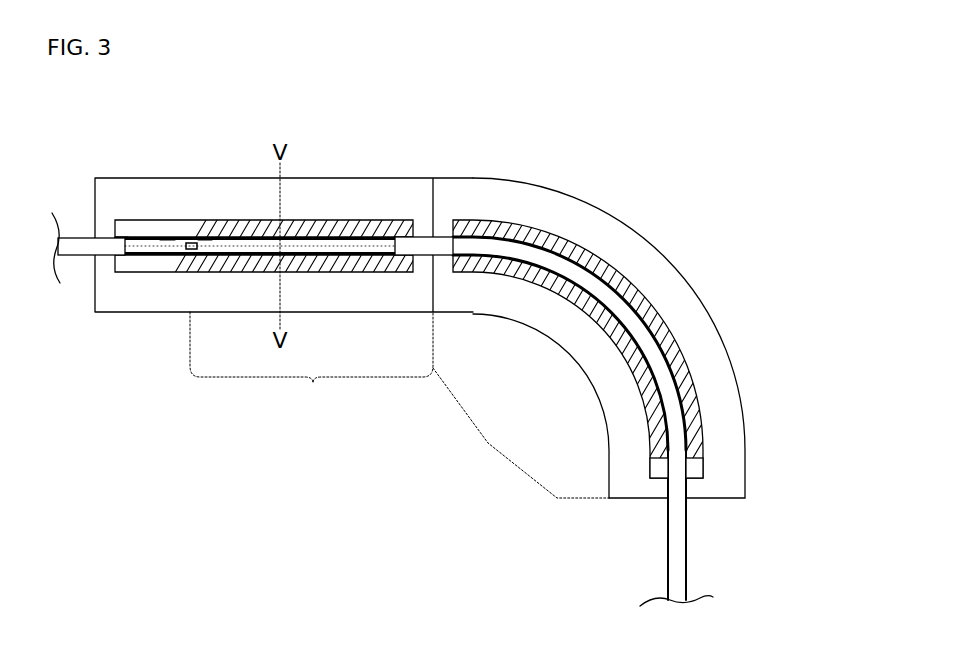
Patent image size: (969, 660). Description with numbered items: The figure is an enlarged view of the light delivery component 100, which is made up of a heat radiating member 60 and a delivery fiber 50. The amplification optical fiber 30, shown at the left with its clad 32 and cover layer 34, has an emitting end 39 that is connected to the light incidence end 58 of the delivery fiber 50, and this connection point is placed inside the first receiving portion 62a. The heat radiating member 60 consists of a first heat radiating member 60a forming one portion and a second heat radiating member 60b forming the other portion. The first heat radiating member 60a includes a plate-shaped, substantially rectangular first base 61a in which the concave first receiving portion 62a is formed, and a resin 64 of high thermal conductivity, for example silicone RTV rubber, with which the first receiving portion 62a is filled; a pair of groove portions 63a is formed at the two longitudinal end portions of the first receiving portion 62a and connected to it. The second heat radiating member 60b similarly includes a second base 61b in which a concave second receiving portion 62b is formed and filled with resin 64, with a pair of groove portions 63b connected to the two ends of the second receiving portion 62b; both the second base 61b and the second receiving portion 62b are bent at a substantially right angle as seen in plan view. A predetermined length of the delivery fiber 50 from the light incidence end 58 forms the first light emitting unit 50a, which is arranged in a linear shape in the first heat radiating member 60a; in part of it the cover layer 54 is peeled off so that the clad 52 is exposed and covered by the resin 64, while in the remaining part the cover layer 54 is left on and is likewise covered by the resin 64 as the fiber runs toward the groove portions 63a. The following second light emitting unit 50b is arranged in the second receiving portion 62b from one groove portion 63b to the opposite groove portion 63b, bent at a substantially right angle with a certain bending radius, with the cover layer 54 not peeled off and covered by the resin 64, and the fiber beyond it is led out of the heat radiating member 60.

The amplification optical fiber 30 is at (84, 262).
The clad 32 is at (167, 240).
The cover layer 34 is at (128, 236).
The emitting end 39 is at (196, 249).
The delivery fiber 50 is at (658, 541).
The first light emitting unit 50a is at (311, 362).
The second light emitting unit 50b is at (521, 433).
The clad 52 is at (306, 247).
The cover layer 54 is at (641, 286).
The light incidence end 58 is at (187, 252).
The heat radiating member 60 is at (554, 131).
The first heat radiating member 60a is at (374, 170).
The second heat radiating member 60b is at (701, 279).
The first base 61a is at (289, 197).
The second base 61b is at (694, 351).
The first receiving portion 62a is at (306, 217).
The second receiving portion 62b is at (528, 221).
The groove portions 63a is at (108, 228).
The groove portions 63b is at (689, 489).
The resin 64 is at (205, 240).
The light delivery component 100 is at (809, 127).